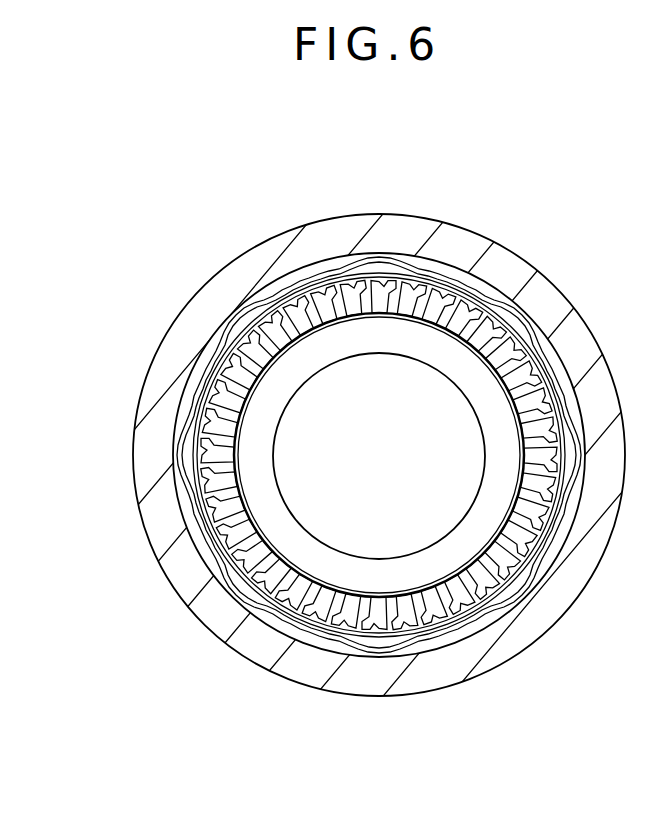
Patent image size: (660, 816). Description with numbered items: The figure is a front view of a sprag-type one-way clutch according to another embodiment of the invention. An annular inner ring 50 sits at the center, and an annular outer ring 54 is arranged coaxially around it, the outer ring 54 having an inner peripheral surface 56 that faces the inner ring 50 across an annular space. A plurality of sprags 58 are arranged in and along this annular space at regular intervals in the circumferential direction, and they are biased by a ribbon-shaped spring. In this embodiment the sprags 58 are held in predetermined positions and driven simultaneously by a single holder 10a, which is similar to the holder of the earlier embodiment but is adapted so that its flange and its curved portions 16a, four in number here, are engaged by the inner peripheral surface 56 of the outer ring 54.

The outer ring 54 is at (426, 232).
The curved portions 16a is at (408, 270).
The inner peripheral surface 56 is at (538, 320).
The sprags 58 is at (238, 307).
The single holder 10a is at (190, 385).
The inner ring 50 is at (381, 344).